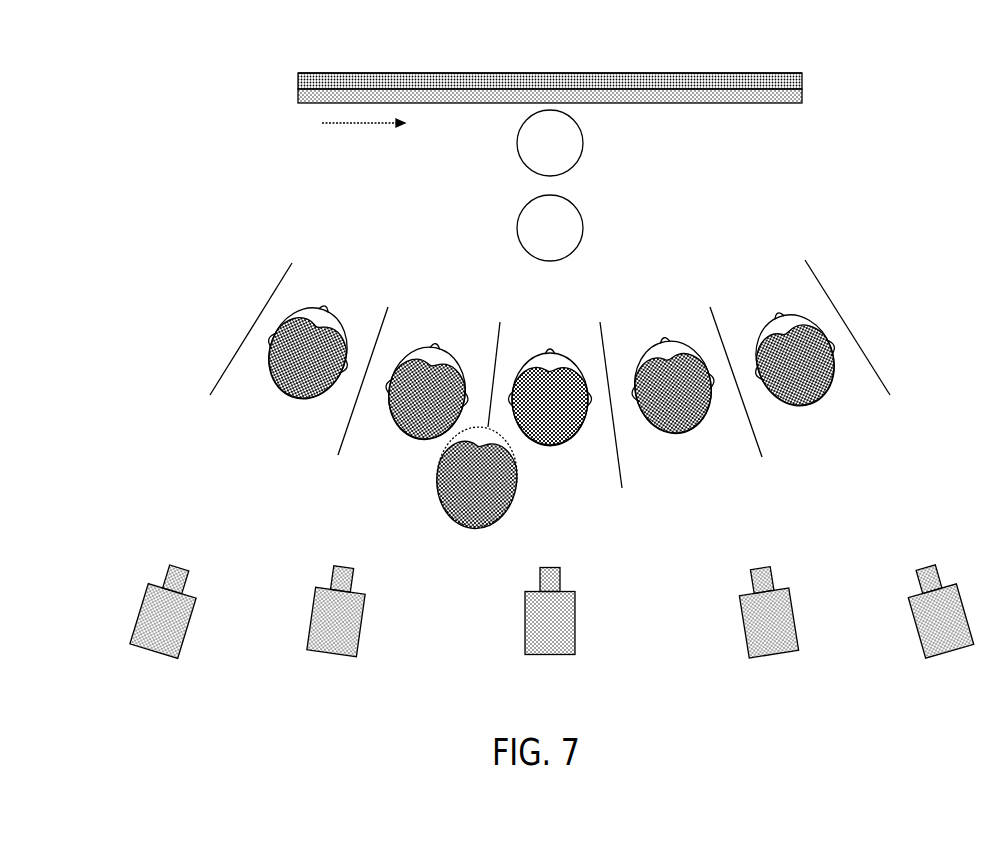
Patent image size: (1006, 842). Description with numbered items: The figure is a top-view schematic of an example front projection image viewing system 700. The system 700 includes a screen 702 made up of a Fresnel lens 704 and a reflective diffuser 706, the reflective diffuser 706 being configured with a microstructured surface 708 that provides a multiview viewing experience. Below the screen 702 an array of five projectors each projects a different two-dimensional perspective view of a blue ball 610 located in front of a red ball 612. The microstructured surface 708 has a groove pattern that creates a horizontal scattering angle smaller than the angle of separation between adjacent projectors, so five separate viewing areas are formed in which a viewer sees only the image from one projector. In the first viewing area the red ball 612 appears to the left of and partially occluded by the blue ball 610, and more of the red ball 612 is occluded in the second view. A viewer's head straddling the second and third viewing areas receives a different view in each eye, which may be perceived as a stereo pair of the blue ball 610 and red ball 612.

The front projection image viewing system 700 is at (512, 329).
The screen 702 is at (590, 67).
The Fresnel lens 704 is at (802, 95).
The reflective diffuser 706 is at (802, 80).
The microstructured surface 708 is at (510, 73).
The blue ball 610 is at (583, 229).
The red ball 612 is at (583, 139).